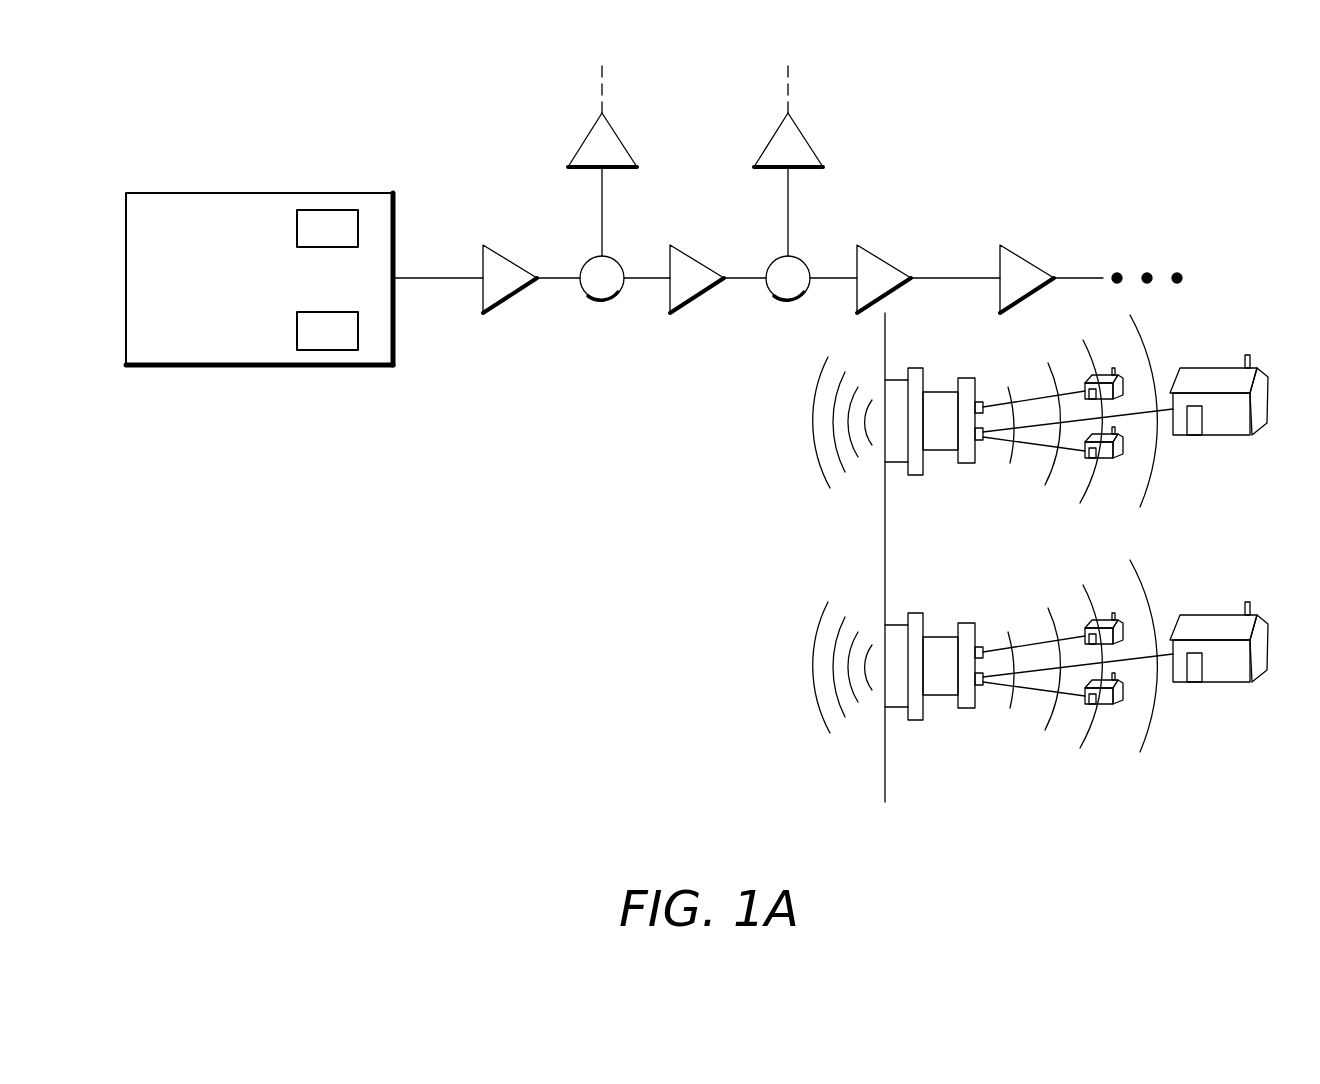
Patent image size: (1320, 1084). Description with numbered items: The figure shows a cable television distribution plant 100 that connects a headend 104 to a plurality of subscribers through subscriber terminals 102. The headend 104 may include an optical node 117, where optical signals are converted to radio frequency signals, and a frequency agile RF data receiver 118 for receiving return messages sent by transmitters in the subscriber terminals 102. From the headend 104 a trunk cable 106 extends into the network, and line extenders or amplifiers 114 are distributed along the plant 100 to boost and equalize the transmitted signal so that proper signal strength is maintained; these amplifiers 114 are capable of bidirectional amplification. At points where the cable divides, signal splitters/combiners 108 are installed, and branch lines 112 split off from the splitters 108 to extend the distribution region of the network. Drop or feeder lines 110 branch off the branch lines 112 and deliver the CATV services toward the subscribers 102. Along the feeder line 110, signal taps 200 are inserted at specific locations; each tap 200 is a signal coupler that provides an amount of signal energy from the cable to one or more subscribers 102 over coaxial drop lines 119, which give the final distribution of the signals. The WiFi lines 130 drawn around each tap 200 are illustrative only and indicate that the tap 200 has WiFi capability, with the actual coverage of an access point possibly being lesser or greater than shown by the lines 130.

The CATV distribution plant 100 is at (1092, 864).
The subscriber terminals 102 is at (1108, 366).
The headend 104 is at (260, 192).
The trunk cable 106 is at (439, 277).
The signal splitter/combiner 108 is at (603, 301).
The drop line 110 is at (887, 331).
The branch line 112 is at (603, 209).
The amplifier 114 is at (512, 260).
The optical node 117 is at (346, 241).
The RF data receiver 118 is at (346, 343).
The drop lines 119 is at (997, 398).
The WiFi lines 130 is at (818, 455).
The signal tap 200 is at (929, 527).